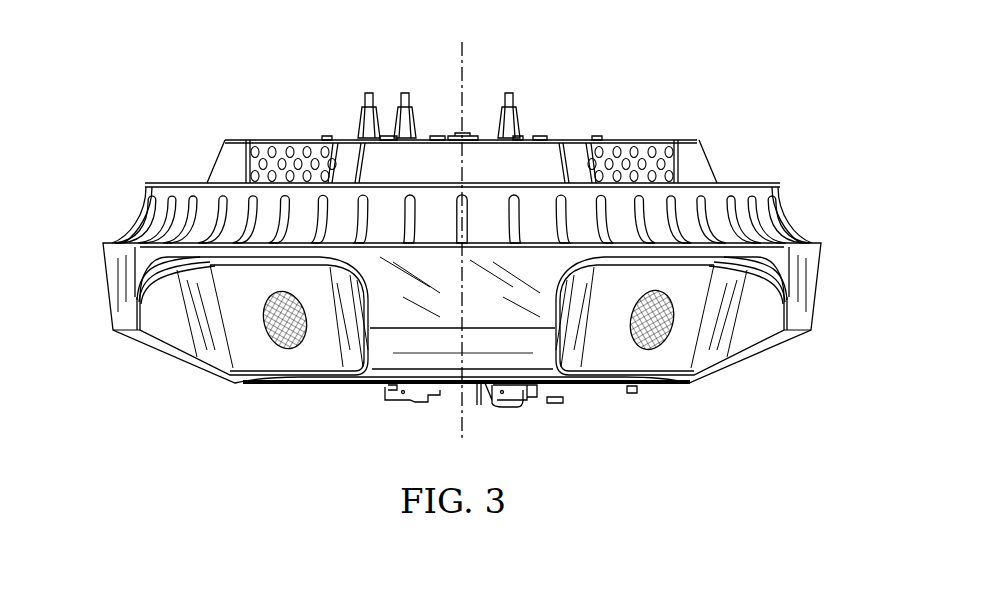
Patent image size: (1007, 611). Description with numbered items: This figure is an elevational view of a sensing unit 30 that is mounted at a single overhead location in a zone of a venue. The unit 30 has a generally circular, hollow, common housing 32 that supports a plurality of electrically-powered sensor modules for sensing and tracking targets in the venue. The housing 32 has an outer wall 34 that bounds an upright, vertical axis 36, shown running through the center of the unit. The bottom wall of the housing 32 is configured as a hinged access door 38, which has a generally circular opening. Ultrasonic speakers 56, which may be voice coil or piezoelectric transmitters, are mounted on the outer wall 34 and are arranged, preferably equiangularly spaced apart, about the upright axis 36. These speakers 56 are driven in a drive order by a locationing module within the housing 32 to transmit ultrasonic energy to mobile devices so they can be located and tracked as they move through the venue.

The sensing unit 30 is at (110, 89).
The common housing 32 is at (817, 234).
The outer wall 34 is at (107, 290).
The upright, vertical axis 36 is at (464, 64).
The hinged access door 38 is at (343, 404).
The ultrasonic speakers 56 is at (273, 317).